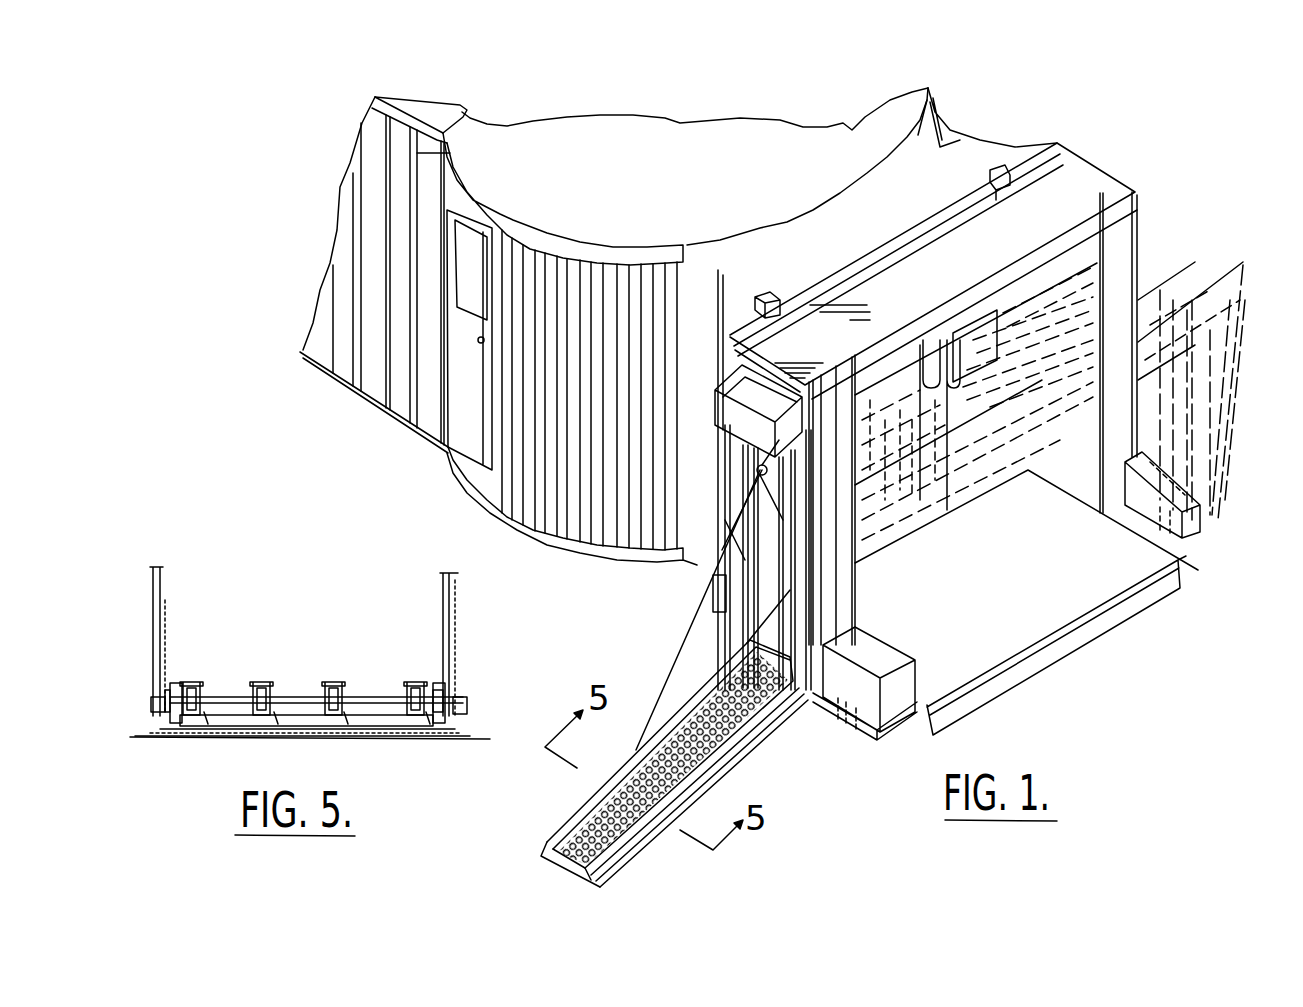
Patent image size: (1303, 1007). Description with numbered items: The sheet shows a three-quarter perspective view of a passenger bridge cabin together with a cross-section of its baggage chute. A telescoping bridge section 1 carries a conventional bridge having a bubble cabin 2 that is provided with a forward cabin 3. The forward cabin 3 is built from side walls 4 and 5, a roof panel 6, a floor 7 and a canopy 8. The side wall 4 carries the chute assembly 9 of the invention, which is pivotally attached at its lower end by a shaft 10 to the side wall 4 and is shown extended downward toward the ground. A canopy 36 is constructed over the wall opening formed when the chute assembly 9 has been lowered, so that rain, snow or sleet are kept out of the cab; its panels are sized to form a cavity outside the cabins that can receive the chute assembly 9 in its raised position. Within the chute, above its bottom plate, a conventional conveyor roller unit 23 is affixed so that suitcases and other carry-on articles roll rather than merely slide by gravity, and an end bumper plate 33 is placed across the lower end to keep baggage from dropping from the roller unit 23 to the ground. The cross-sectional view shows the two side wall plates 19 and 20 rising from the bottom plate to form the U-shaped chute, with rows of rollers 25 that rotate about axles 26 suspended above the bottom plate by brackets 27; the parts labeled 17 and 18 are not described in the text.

In FIG. 1, the telescoping bridge section 1 is at (423, 98).
In FIG. 1, the bubble cabin 2 is at (680, 112).
In FIG. 1, the forward cabin 3 is at (1108, 160).
In FIG. 1, the side wall 4 is at (737, 357).
In FIG. 1, the side wall 5 is at (1143, 212).
In FIG. 1, the roof panel 6 is at (1060, 140).
In FIG. 1, the floor 7 is at (1072, 593).
In FIG. 1, the canopy 8 is at (1185, 262).
In FIG. 1, the chute assembly 9 is at (686, 661).
In FIG. 1, the shaft 10 is at (813, 697).
In FIG. 1, the conveyor roller unit 23 is at (612, 795).
In FIG. 1, the end bumper plate 33 is at (573, 863).
In FIG. 1, the canopy 36 is at (783, 388).
In FIG. 5, the side post 17 is at (456, 582).
In FIG. 5, the side post 18 is at (166, 573).
In FIG. 5, the side wall plate 19 is at (440, 627).
In FIG. 5, the side wall plate 20 is at (170, 637).
In FIG. 5, the rollers 25 is at (263, 681).
In FIG. 5, the axles 26 is at (378, 645).
In FIG. 5, the brackets 27 is at (273, 688).